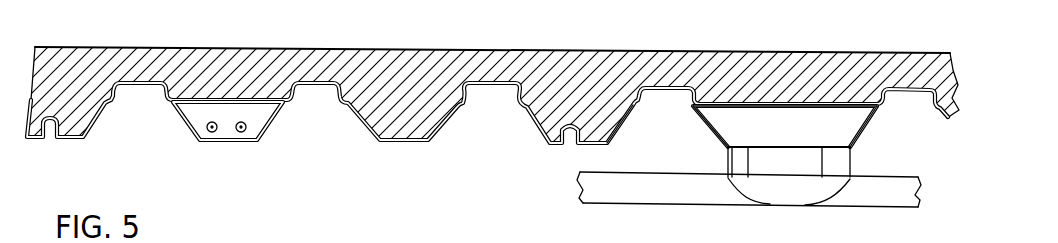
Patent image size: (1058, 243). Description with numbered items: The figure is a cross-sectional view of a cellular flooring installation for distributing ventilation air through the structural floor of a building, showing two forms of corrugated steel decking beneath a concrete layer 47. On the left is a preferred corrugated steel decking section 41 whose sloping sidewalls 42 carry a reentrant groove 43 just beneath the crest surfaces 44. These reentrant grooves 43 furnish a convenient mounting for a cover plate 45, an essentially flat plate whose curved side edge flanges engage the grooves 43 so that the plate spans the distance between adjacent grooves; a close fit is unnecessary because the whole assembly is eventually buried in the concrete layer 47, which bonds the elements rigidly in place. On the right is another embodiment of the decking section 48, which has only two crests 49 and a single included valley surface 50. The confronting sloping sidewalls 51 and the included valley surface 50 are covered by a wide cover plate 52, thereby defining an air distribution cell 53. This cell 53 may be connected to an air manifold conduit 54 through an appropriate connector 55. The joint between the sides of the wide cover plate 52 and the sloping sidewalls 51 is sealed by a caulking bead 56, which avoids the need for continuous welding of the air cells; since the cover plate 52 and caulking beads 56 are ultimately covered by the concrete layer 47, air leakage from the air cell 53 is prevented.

The corrugated steel decking section 41 is at (306, 82).
The sloping sidewalls 42 is at (318, 131).
The reentrant groove 43 is at (165, 104).
The crest surfaces 44 is at (334, 82).
The cover plate 45 is at (254, 101).
The concrete layer 47 is at (84, 60).
The decking section 48 is at (921, 92).
The crests 49 is at (668, 80).
The included valley surface 50 is at (736, 142).
The confronting sloping sidewalls 51 is at (615, 118).
The wide cover plate 52 is at (795, 102).
The air distribution cell 53 is at (800, 137).
The air manifold conduit 54 is at (818, 206).
The connector 55 is at (828, 162).
The caulking bead 56 is at (702, 100).